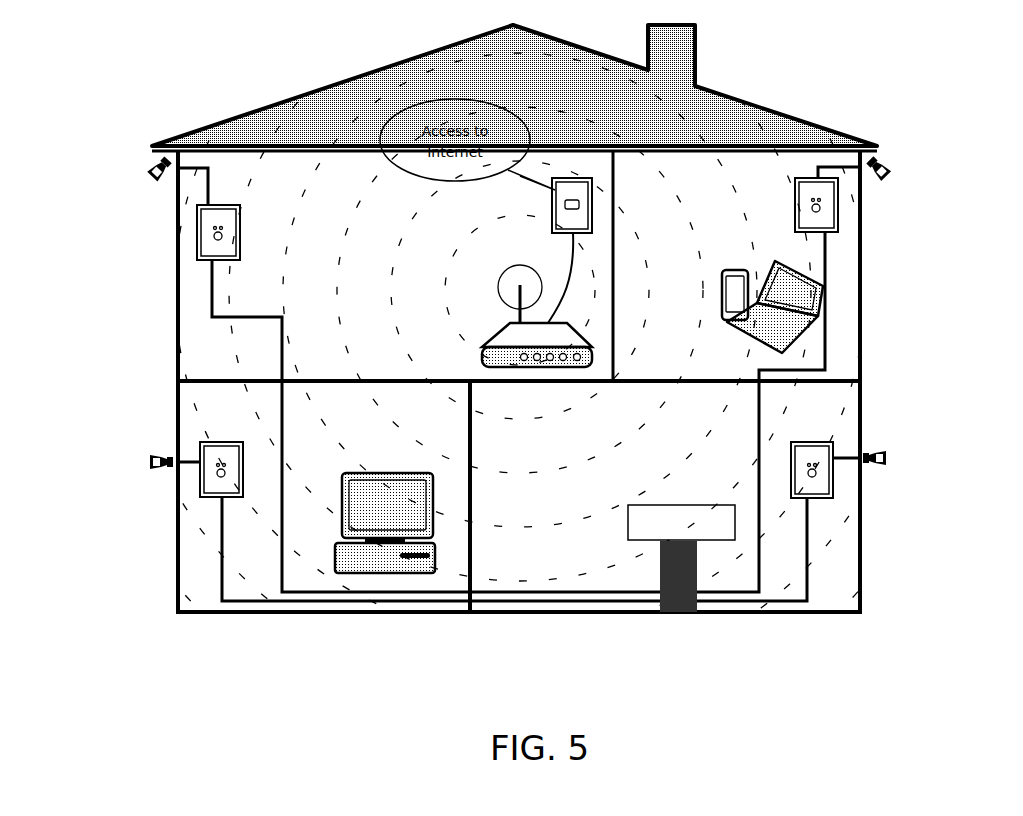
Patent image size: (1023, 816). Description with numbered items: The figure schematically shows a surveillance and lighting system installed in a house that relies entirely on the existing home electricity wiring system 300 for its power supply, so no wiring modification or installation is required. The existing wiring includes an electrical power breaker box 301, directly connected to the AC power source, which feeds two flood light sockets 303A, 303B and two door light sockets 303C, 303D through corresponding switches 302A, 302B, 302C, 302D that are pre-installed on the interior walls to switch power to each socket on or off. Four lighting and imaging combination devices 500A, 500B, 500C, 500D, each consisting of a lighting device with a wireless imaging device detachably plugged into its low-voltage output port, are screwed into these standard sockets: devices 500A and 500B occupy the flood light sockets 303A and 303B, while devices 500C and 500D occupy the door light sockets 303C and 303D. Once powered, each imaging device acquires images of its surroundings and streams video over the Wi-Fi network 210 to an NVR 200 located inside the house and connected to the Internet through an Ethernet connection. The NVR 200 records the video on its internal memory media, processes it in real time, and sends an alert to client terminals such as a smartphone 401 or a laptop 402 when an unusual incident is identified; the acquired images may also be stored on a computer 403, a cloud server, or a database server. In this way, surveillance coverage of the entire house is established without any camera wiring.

The NVR 200 is at (495, 328).
The Wi-Fi network 210 is at (390, 257).
The existing home electricity wiring system 300 is at (282, 578).
The electrical power breaker box 301 is at (683, 592).
The switch 302A is at (213, 238).
The switch 302B is at (828, 213).
The switch 302C is at (210, 485).
The switch 302D is at (827, 487).
The flood light socket 303A is at (163, 159).
The flood light socket 303B is at (875, 163).
The door light socket 303C is at (168, 458).
The door light socket 303D is at (870, 466).
The smartphone 401 is at (738, 305).
The laptop 402 is at (830, 310).
The computer 403 is at (390, 562).
The lighting and imaging combination device 500A is at (147, 183).
The lighting and imaging combination device 500B is at (887, 178).
The lighting and imaging combination device 500C is at (150, 468).
The lighting and imaging combination device 500D is at (887, 462).